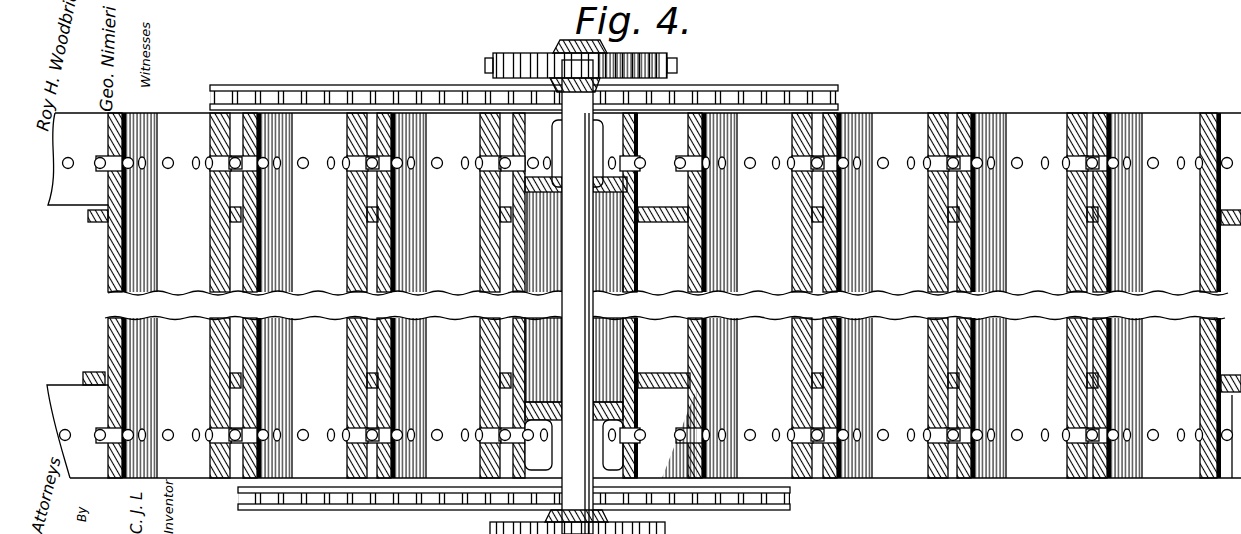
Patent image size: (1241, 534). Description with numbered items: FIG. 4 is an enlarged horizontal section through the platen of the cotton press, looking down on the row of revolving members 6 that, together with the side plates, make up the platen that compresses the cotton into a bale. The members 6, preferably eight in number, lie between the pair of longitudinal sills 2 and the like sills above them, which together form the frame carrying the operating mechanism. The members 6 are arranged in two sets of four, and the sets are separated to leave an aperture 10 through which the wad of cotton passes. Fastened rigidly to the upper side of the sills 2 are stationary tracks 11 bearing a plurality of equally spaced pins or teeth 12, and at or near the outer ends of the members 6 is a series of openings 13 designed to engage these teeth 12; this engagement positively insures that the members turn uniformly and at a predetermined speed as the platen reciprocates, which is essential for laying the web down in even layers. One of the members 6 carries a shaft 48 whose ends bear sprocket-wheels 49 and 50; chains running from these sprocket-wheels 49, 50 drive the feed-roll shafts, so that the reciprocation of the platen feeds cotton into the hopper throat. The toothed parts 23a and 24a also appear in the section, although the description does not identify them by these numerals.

The longitudinal sills 2 is at (60, 435).
The revolving members 6 is at (644, 204).
The aperture 10 is at (599, 295).
The stationary tracks 11 is at (76, 221).
The pins or teeth 12 is at (168, 169).
The openings 13 is at (200, 149).
The lower rack 23a is at (514, 510).
The upper rack 24a is at (800, 86).
The shaft 48 is at (567, 75).
The sprocket-wheel 49 is at (556, 522).
The sprocket-wheel 50 is at (668, 58).